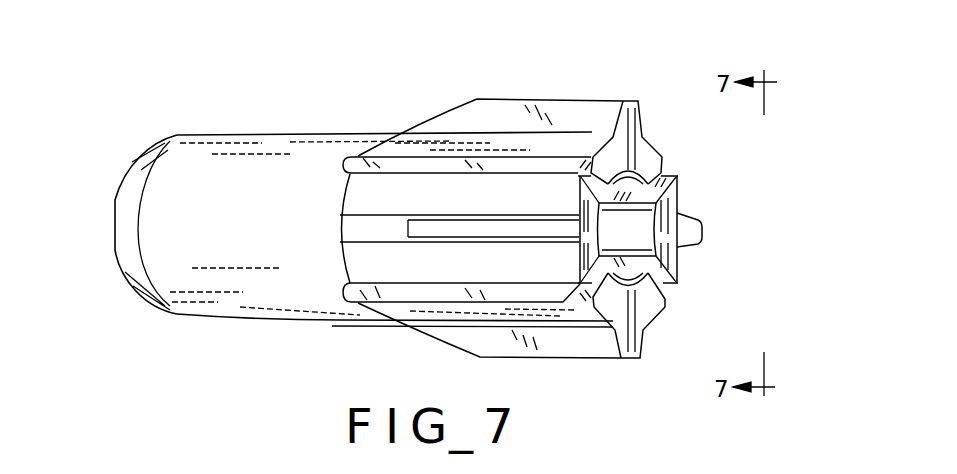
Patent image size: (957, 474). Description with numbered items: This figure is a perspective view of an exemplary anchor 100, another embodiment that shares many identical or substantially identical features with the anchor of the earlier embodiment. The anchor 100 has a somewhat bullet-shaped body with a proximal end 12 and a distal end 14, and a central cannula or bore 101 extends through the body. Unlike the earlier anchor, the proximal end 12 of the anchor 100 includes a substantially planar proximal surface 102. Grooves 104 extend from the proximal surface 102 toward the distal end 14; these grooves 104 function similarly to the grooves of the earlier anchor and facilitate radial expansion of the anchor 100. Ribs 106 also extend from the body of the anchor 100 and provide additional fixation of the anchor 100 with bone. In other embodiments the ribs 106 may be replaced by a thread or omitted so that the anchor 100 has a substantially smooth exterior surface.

The anchor 100 is at (150, 113).
The distal end 14 is at (117, 152).
The proximal end 12 is at (612, 80).
The central cannula or bore 101 is at (638, 242).
The proximal surface 102 is at (637, 155).
The grooves 104 is at (400, 168).
The ribs 106 is at (505, 112).